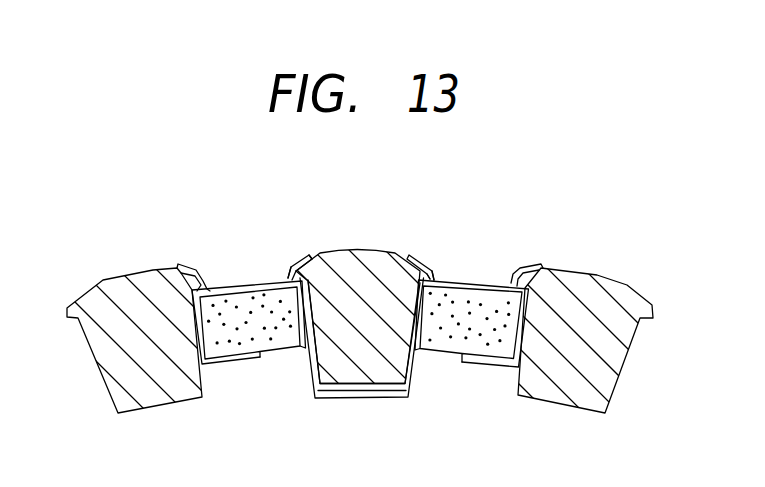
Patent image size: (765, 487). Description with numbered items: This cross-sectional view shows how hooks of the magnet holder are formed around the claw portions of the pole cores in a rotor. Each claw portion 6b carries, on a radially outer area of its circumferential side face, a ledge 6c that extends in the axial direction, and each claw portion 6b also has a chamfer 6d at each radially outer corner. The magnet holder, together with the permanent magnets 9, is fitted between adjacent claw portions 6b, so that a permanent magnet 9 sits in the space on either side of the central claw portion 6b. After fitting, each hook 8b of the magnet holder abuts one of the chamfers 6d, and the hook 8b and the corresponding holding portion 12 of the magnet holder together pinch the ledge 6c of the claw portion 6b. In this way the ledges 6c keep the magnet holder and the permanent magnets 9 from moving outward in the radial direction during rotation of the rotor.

The claw portion 6b is at (367, 273).
The ledge 6c is at (289, 271).
The chamfer 6d is at (316, 257).
The hook 8b is at (292, 267).
The permanent magnet 9 is at (240, 343).
The holding portion 12 is at (232, 285).